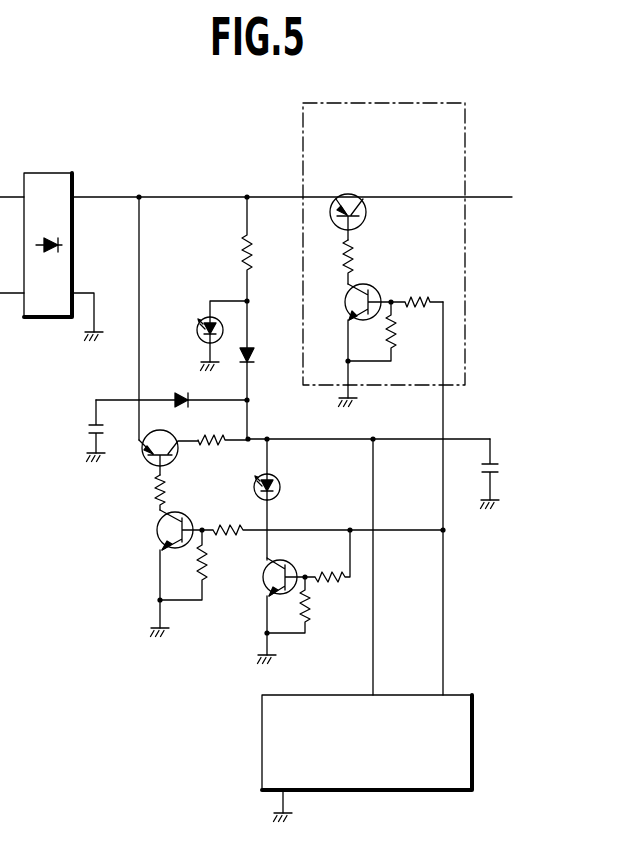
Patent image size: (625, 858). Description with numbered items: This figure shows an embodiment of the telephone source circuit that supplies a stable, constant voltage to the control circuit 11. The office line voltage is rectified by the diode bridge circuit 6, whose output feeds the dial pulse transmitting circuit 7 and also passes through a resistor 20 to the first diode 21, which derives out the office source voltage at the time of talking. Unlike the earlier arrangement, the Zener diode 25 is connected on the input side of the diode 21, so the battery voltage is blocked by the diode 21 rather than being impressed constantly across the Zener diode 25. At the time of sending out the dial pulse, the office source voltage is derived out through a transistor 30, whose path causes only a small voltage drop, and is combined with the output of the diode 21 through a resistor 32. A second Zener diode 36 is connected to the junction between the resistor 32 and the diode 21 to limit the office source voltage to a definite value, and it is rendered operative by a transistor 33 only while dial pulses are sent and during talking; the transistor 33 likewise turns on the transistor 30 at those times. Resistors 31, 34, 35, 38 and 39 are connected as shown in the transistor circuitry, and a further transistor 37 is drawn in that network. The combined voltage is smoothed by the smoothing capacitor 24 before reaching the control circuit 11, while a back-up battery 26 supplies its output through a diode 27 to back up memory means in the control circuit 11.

The diode bridge circuit 6 is at (71, 173).
The dial pulse transmitting circuit 7 is at (468, 158).
The control circuit 11 is at (262, 707).
The resistor 20 is at (238, 255).
The first diode 21 is at (255, 352).
The smoothing capacitor 24 is at (500, 466).
The Zener diode 25 is at (201, 317).
The back-up battery 26 is at (88, 432).
The diode 27 is at (182, 395).
The transistor 30 is at (150, 463).
The resistor 31 is at (153, 497).
The resistor 32 is at (209, 446).
The transistor 33 is at (162, 540).
The resistor 34 is at (210, 566).
The resistor 35 is at (228, 523).
The second Zener diode 36 is at (281, 485).
The transistor 37 is at (266, 570).
The resistor 38 is at (312, 600).
The resistor 39 is at (331, 573).